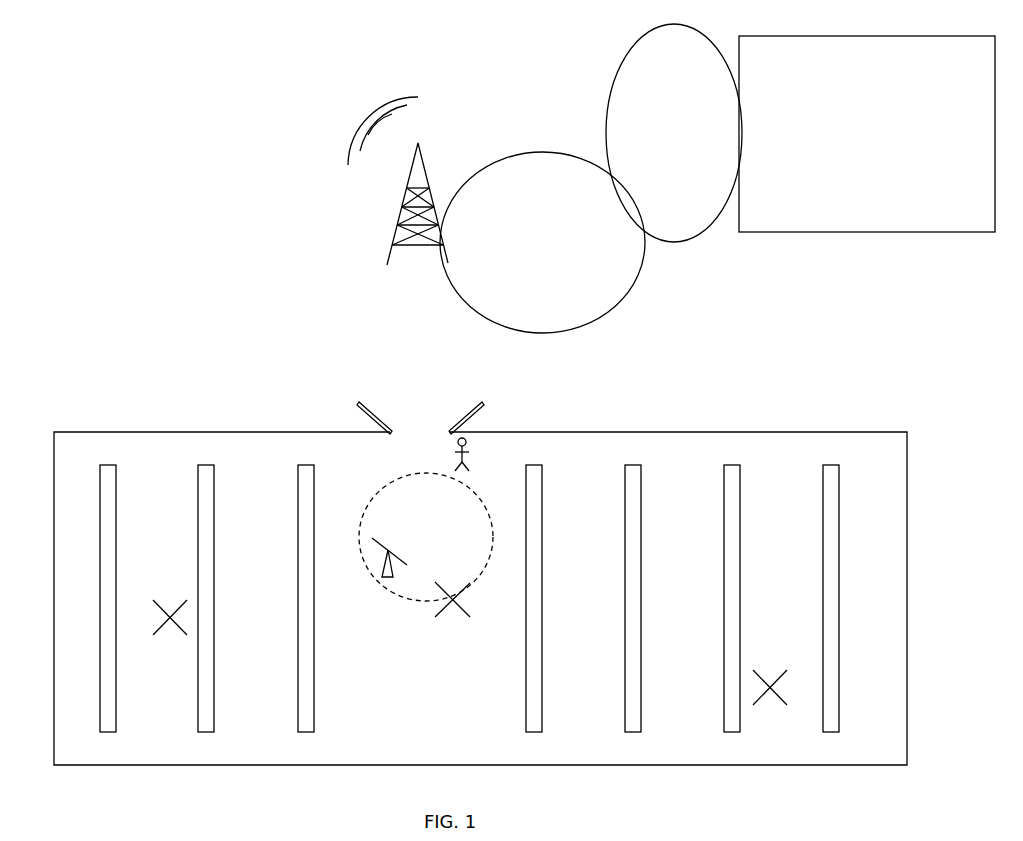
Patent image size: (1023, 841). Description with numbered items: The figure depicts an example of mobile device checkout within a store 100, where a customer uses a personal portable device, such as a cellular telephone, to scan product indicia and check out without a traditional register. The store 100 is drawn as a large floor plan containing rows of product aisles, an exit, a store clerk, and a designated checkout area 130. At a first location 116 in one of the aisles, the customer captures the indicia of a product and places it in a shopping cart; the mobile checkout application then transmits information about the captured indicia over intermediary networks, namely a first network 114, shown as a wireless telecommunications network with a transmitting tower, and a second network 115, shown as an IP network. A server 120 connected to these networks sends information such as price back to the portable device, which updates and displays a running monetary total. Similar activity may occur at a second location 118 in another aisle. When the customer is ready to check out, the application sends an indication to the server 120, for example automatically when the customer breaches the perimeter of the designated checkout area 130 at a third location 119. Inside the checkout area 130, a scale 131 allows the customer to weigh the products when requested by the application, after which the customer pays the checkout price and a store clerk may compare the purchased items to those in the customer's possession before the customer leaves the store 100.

The store 100 is at (240, 430).
The first network 114 is at (560, 333).
The second network 115 is at (672, 240).
The first location 116 is at (168, 627).
The second location 118 is at (770, 702).
The third location 119 is at (448, 620).
The server 120 is at (817, 232).
The designated checkout area 130 is at (368, 573).
The scale 131 is at (385, 560).